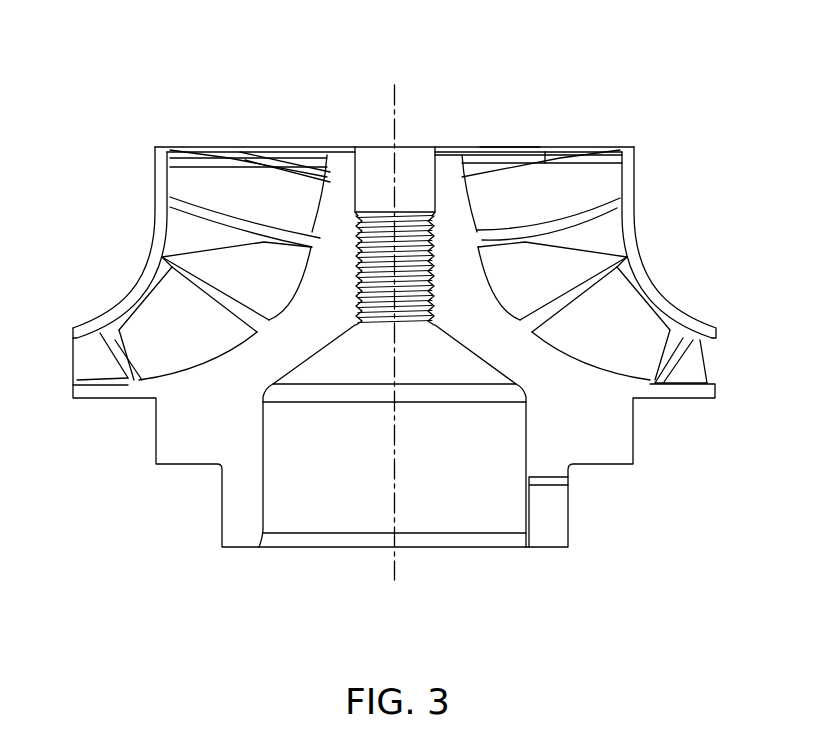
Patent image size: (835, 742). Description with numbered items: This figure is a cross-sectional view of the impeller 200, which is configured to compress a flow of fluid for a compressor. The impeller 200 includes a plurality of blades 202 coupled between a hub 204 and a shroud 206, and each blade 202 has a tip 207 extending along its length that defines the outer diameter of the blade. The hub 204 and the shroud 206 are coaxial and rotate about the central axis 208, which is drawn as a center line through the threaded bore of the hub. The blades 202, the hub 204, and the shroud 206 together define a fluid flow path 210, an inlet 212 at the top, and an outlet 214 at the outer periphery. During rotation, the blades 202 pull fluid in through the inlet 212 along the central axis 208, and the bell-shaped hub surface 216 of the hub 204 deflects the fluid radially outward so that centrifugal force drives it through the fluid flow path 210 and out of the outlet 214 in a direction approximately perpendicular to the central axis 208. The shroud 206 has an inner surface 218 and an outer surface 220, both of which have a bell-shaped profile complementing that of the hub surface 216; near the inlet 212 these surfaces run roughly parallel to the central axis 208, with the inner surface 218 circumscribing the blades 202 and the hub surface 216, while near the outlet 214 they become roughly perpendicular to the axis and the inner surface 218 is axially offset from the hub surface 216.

The impeller 200 is at (703, 230).
The blade 202 is at (583, 172).
The hub 204 is at (330, 228).
The shroud 206 is at (145, 282).
The tip 207 is at (627, 250).
The central axis 208 is at (391, 99).
The fluid flow path 210 is at (542, 245).
The inlet 212 is at (512, 120).
The outlet 214 is at (713, 355).
The hub surface 216 is at (292, 296).
The inner surface 218 is at (165, 328).
The outer surface 220 is at (135, 297).